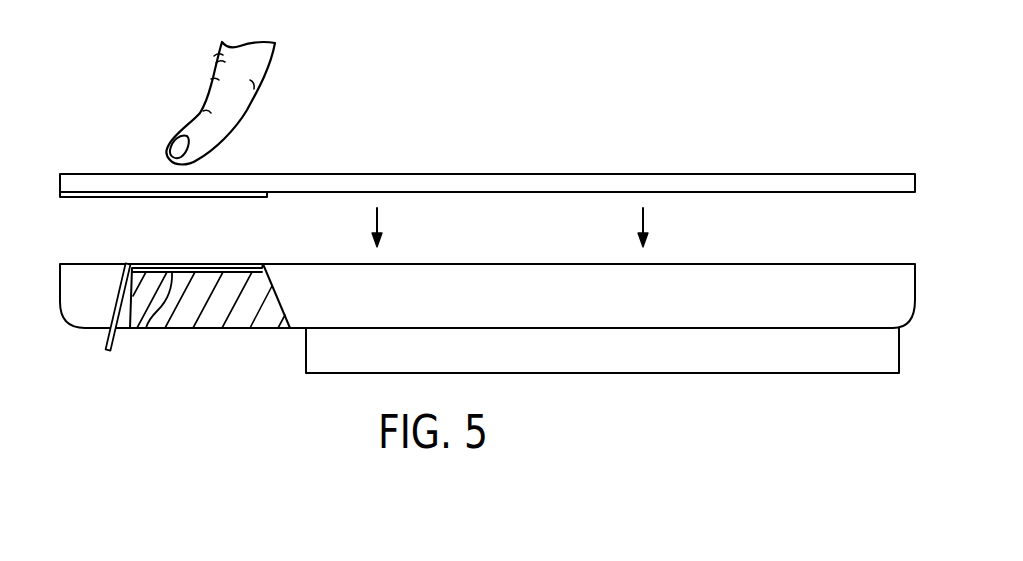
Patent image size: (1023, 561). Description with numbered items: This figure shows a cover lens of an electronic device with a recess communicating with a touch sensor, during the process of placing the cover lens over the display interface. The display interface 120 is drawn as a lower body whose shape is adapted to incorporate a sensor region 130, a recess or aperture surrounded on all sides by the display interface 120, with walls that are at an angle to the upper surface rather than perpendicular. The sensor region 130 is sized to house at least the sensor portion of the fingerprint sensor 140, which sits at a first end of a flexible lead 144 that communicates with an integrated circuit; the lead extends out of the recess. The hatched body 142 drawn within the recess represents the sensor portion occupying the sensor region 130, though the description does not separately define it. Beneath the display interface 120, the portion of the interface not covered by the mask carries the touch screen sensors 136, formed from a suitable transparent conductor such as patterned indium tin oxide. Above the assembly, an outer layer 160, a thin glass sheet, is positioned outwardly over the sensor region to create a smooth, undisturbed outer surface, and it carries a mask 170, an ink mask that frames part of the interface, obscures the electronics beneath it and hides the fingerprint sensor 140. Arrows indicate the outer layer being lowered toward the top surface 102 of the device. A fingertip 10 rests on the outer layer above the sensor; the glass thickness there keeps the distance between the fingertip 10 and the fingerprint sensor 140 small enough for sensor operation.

The fingertip 10 is at (245, 111).
The top surface 102 is at (543, 173).
The display interface 120 is at (898, 302).
The sensor region 130 is at (209, 334).
The touch screen sensors 136 is at (886, 355).
The fingerprint sensor 140 is at (146, 330).
The hatched sensor body 142 is at (212, 307).
The flexible lead 144 is at (105, 341).
The outer layer 160 is at (898, 186).
The mask 170 is at (90, 198).